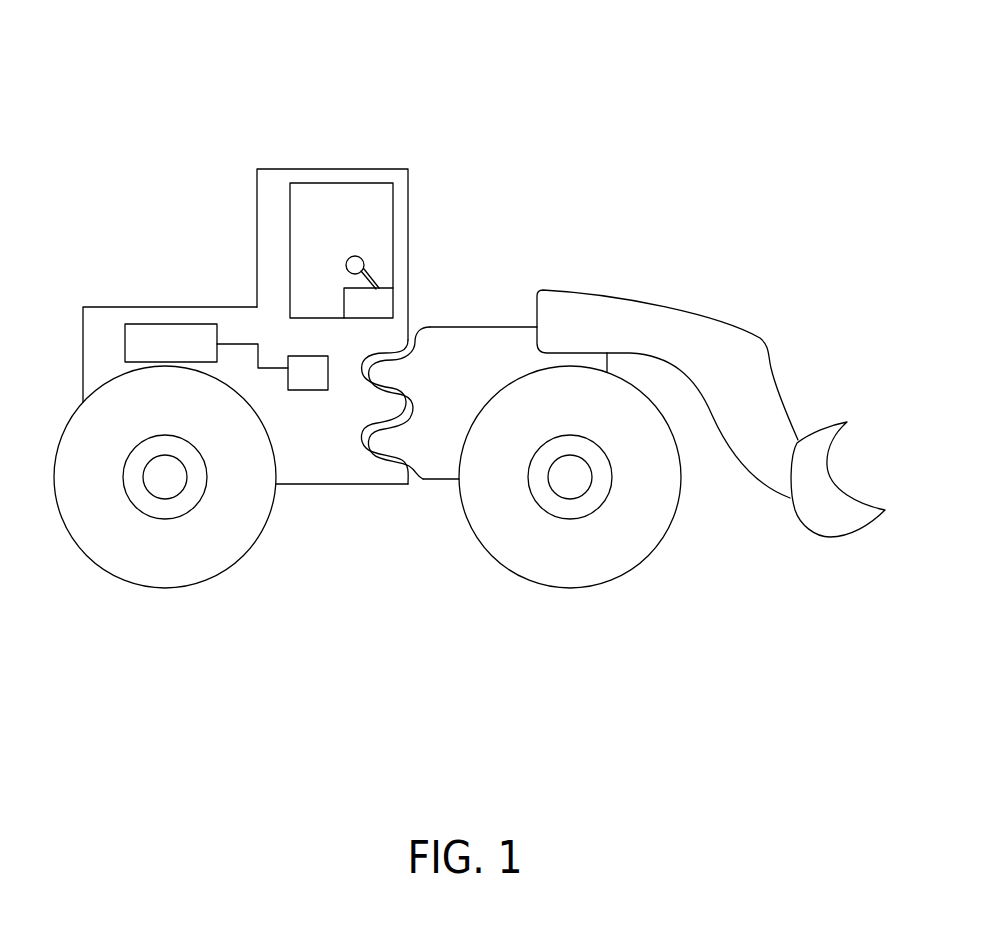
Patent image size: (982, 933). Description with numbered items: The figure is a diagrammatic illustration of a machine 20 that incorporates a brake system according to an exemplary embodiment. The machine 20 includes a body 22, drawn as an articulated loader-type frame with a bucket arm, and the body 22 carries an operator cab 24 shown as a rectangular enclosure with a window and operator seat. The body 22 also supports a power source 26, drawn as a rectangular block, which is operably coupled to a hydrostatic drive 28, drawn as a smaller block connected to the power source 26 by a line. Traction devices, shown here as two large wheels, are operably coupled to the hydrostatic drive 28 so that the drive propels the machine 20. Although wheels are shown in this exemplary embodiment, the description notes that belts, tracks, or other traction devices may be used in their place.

The machine 20 is at (628, 92).
The body 22 is at (425, 479).
The operator cab 24 is at (384, 177).
The power source 26 is at (162, 340).
The hydrostatic drive 28 is at (304, 383).